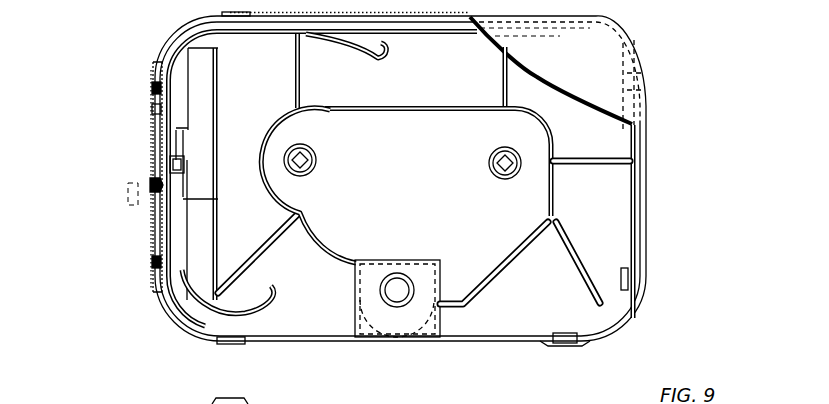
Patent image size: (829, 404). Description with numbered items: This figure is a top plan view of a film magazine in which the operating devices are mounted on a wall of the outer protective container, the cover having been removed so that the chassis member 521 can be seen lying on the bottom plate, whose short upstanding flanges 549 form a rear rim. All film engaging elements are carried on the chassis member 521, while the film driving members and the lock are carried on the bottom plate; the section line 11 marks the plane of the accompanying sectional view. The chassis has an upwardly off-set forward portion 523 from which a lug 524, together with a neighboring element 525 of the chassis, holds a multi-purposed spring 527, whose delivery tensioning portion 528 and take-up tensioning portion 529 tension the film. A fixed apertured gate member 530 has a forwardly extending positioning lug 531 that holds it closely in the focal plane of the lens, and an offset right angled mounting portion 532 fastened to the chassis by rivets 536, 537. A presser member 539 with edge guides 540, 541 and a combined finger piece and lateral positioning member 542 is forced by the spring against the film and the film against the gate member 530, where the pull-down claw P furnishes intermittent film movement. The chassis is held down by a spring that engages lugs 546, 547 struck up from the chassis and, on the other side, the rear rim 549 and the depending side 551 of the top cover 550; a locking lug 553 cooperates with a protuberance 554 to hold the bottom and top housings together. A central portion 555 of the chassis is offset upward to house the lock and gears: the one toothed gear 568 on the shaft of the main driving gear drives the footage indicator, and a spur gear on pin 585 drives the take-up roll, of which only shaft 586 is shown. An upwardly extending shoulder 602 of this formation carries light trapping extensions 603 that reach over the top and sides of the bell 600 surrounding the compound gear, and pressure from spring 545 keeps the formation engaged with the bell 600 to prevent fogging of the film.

The section line 11 is at (407, 47).
The pull-down claw P is at (130, 203).
The chassis member 521 is at (402, 71).
The upwardly off-set forward portion 523 is at (203, 168).
The lug 524 is at (180, 133).
The cross wall 525 is at (187, 199).
The multi-purposed spring 527 is at (170, 112).
The delivery tensioning portion 528 is at (357, 42).
The take-up tensioning portion 529 is at (274, 302).
The fixed apertured gate member 530 is at (157, 160).
The forwardly extending positioning lug 531 is at (147, 187).
The offset right angled mounting portion 532 is at (152, 233).
The rivet 536 is at (200, 70).
The rivet 537 is at (203, 267).
The presser member 539 is at (152, 110).
The edge guide 540 is at (152, 88).
The edge guide 541 is at (155, 260).
The combined finger piece and lateral positioning member 542 is at (261, 146).
The spring 545 is at (637, 232).
The lug 546 is at (627, 82).
The lug 547 is at (626, 279).
The upstanding flange 549 is at (645, 215).
The top cover 550 is at (551, 70).
The depending side 551 is at (650, 102).
The bottom tab 553 is at (571, 347).
The protuberance 554 is at (553, 346).
The central portion 555 is at (438, 163).
The one toothed gear 568 is at (393, 300).
The pin 585 is at (316, 154).
The shaft 586 is at (312, 166).
The bell 600 is at (362, 343).
The upwardly extending shoulder 602 is at (423, 258).
The light trapping extension 603 is at (434, 278).